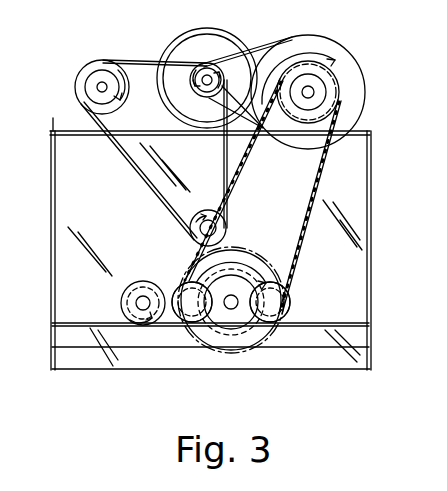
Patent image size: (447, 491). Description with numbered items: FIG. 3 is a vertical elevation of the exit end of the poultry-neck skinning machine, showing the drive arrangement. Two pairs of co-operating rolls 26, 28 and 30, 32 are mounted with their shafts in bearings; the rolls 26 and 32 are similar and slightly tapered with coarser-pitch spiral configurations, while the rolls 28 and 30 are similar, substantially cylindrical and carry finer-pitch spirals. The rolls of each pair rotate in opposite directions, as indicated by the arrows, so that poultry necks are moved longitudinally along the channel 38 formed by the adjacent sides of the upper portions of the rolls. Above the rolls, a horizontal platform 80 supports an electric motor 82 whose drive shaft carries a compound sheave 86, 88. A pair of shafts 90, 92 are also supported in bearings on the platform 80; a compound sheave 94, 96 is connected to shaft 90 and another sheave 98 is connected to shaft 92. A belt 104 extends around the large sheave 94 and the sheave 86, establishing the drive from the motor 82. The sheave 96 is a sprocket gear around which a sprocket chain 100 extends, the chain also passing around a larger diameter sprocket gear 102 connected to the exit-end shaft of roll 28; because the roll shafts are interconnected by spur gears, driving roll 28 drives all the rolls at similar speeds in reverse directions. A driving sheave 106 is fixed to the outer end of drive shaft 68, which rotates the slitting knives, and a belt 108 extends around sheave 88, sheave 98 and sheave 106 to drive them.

The roll 26 is at (296, 303).
The roll 28 is at (247, 330).
The roll 30 is at (172, 333).
The roll 32 is at (137, 325).
The channel 38 is at (168, 283).
The drive shaft 68 is at (212, 233).
The horizontal platform 80 is at (172, 137).
The electric motor 82 is at (217, 42).
The sheave 86 is at (192, 82).
The sheave 88 is at (203, 70).
The shaft 90 is at (314, 92).
The shaft 92 is at (102, 84).
The large sheave 94 is at (340, 55).
The sheave 96 is at (327, 107).
The sheave 98 is at (76, 93).
The sprocket chain 100 is at (316, 186).
The sprocket gear 102 is at (214, 337).
The belt 104 is at (260, 38).
The driving sheave 106 is at (193, 230).
The belt 108 is at (156, 196).